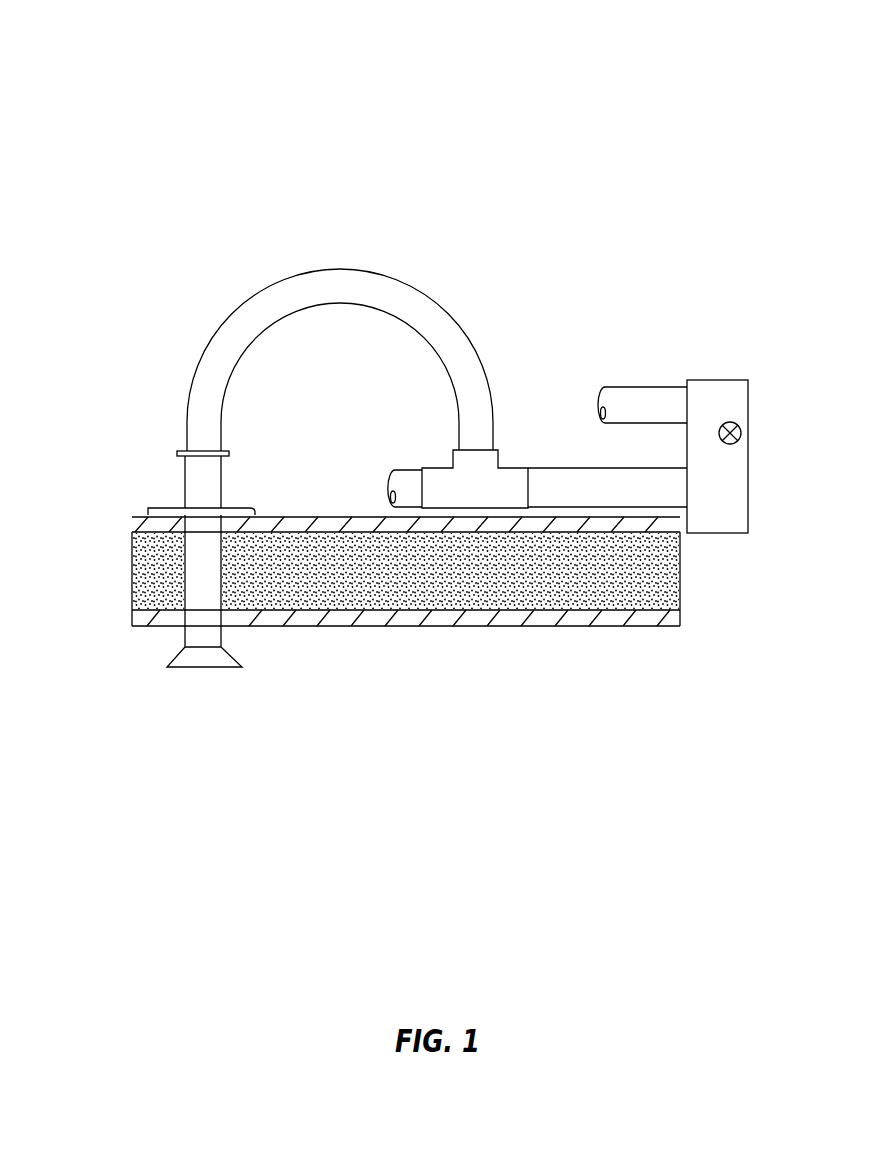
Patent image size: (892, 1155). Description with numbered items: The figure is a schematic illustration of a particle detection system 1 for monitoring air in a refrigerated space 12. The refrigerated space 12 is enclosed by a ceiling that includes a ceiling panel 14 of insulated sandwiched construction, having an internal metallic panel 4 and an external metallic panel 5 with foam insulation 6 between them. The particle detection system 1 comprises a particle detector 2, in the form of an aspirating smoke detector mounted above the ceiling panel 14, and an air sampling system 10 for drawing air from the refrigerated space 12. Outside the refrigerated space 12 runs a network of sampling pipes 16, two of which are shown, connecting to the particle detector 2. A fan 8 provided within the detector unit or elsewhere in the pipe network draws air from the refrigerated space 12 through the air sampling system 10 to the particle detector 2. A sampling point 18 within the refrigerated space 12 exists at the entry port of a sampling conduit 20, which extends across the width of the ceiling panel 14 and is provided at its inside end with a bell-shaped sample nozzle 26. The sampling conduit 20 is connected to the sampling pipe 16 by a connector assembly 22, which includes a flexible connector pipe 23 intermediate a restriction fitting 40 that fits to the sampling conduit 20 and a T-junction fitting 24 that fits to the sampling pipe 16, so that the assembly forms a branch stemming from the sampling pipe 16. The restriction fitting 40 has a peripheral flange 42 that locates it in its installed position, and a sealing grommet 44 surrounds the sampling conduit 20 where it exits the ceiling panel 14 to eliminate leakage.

The particle detection system 1 is at (183, 75).
The particle detector 2 is at (722, 540).
The internal metallic panel 4 is at (138, 617).
The external metallic panel 5 is at (134, 527).
The foam insulation 6 is at (138, 571).
The fan 8 is at (735, 424).
The air sampling system 10 is at (554, 279).
The refrigerated space 12 is at (571, 676).
The ceiling panel 14 is at (571, 579).
The sampling pipe 16 is at (580, 462).
The sampling point 18 is at (204, 680).
The sampling conduit 20 is at (226, 598).
The connector assembly 22 is at (289, 248).
The flexible connector pipe 23 is at (382, 270).
The T-junction fitting 24 is at (431, 450).
The bell-shaped sample nozzle 26 is at (152, 668).
The restriction fitting 40 is at (170, 452).
The peripheral flange 42 is at (229, 453).
The sealing grommet 44 is at (156, 510).